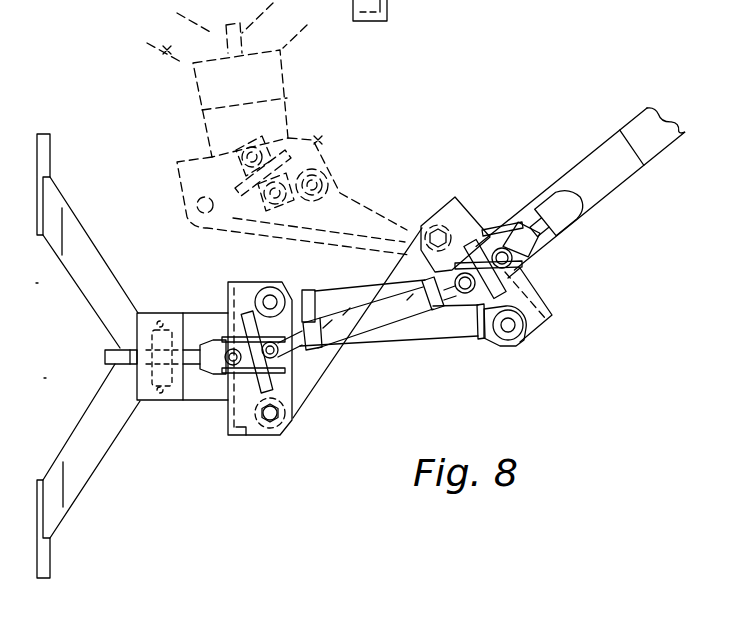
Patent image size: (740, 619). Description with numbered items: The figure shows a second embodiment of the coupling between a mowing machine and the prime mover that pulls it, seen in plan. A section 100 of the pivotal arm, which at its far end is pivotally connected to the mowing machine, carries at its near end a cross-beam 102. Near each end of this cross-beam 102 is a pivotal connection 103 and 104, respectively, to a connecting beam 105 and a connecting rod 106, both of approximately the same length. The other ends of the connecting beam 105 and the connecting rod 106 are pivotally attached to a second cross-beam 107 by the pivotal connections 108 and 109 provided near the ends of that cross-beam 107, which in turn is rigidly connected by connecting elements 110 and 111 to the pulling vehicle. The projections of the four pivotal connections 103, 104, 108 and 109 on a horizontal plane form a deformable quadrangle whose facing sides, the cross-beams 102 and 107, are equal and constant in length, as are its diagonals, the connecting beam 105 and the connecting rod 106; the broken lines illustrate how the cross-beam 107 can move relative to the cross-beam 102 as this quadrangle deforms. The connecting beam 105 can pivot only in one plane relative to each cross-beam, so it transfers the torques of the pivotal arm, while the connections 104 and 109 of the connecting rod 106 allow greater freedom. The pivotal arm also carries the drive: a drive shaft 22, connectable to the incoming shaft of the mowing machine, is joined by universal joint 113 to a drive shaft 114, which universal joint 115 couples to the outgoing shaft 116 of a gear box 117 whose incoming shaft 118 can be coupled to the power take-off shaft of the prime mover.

The drive shaft 22 is at (556, 207).
The section of pivotal arm 100 is at (636, 132).
The cross-beam 102 is at (550, 308).
The pivotal connection 103 is at (440, 224).
The pivotal connection 104 is at (522, 333).
The connecting beam 105 is at (350, 348).
The connecting rod 106 is at (466, 330).
The cross-beam 107 is at (318, 140).
The pivotal connection 108 is at (268, 428).
The pivotal connection 109 is at (272, 287).
The connecting element 110 is at (200, 322).
The connecting element 111 is at (167, 51).
The universal joint 113 is at (488, 232).
The drive shaft 114 is at (353, 317).
The universal joint 115 is at (250, 392).
The outgoing shaft 116 is at (183, 364).
The gear box 117 is at (178, 394).
The incoming shaft 118 is at (105, 353).